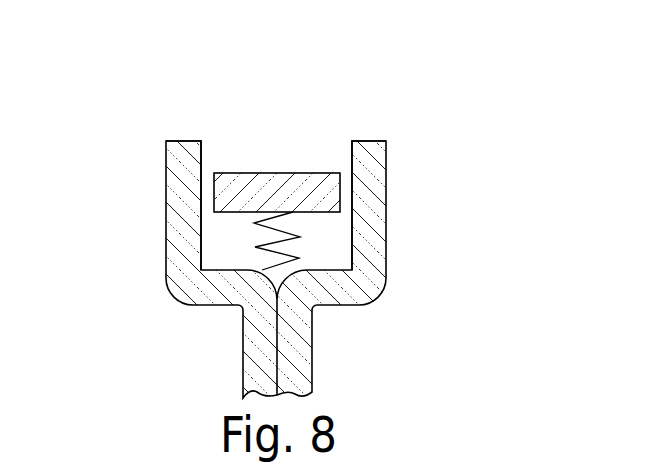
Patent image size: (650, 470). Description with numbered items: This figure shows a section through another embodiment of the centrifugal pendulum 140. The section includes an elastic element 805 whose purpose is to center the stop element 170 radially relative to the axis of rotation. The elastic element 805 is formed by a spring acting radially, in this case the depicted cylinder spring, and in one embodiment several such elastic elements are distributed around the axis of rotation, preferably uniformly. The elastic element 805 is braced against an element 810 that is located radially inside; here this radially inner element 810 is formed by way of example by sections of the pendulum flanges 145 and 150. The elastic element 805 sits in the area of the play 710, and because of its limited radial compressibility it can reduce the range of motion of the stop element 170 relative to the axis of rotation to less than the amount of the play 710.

The centrifugal pendulum 140 is at (275, 205).
The pendulum flange 145 is at (183, 141).
The pendulum flange 150 is at (370, 141).
The stop element 170 is at (265, 173).
The play 710 is at (230, 244).
The elastic element 805 is at (300, 237).
The element located radially inside 810 is at (323, 255).